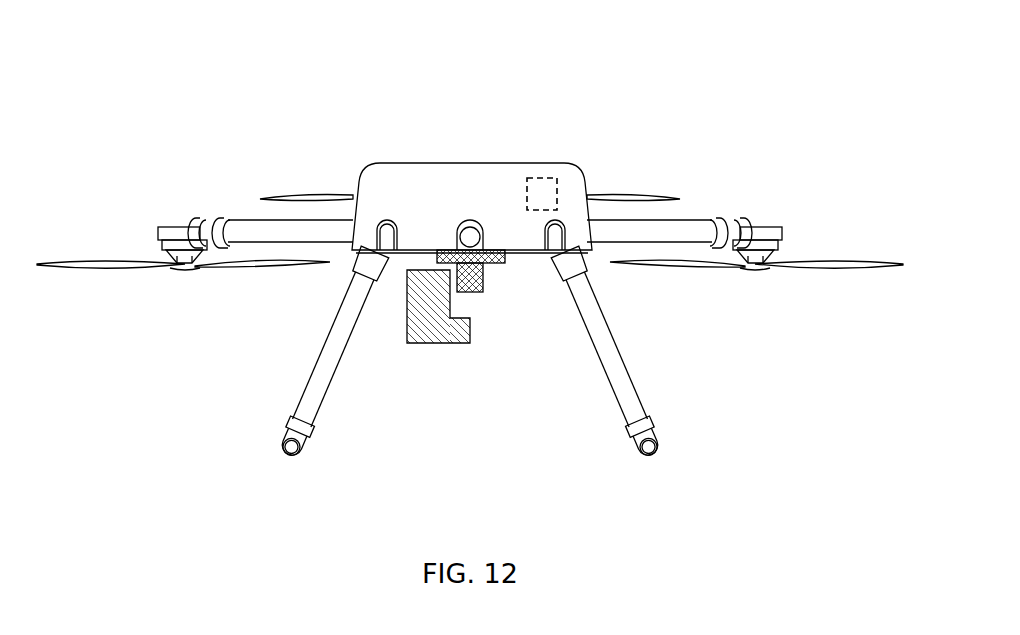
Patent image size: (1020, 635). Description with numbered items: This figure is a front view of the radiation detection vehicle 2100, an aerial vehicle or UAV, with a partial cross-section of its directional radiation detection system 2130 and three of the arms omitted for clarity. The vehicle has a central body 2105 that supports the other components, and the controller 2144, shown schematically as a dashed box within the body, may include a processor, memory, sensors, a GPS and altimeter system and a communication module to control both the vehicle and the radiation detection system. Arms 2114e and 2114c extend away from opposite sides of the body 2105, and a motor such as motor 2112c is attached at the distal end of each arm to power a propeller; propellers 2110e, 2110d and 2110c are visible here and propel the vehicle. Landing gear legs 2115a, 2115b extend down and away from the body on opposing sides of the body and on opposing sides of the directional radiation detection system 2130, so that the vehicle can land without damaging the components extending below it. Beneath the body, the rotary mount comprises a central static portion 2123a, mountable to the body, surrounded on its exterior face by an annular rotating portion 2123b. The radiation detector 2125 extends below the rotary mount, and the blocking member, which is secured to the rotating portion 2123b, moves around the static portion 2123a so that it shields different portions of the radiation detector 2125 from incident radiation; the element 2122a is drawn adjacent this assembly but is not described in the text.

The radiation detection vehicle 2100 is at (296, 90).
The body 2105 is at (440, 170).
The controller 2144 is at (543, 183).
The arm 2114e is at (173, 228).
The arm 2114c is at (687, 227).
The motor 2112c is at (763, 235).
The propeller 2110d is at (618, 198).
The propeller 2110e is at (142, 267).
The propeller 2110c is at (785, 273).
The leg 2115a is at (327, 383).
The leg 2115b is at (618, 373).
The annular rotating portion 2123b is at (437, 253).
The central static portion 2123a is at (480, 253).
The radiation detector 2125 is at (468, 287).
The payload 2122a is at (437, 332).
The directional radiation detection system 2130 is at (478, 368).